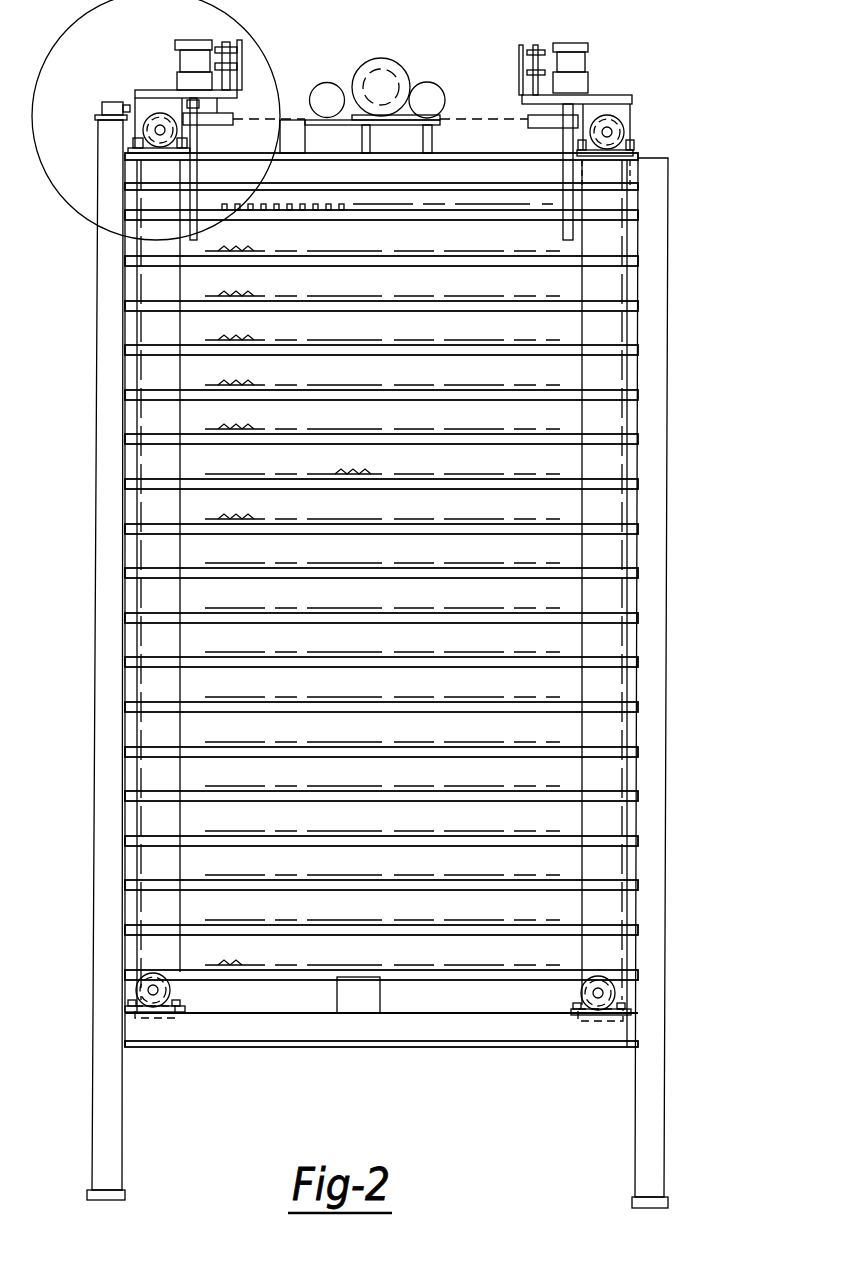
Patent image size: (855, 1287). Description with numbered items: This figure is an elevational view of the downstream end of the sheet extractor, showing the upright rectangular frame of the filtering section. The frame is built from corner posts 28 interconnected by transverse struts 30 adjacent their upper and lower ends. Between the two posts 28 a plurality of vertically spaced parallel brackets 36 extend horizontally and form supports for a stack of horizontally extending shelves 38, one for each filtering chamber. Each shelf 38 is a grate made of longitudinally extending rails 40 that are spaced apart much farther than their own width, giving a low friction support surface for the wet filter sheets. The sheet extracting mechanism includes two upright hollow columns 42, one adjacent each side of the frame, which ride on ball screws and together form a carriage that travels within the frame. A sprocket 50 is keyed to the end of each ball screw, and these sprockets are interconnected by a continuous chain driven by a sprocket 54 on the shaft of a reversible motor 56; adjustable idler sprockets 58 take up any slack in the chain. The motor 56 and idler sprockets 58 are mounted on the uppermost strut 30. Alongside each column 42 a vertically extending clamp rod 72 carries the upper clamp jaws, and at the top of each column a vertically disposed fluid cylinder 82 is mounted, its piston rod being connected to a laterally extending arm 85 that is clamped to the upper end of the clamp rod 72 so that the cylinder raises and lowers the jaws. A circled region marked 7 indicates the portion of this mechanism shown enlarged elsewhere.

The detail circle (FIG. 7 area) 7 is at (156, 120).
The corner post 28 is at (658, 230).
The transverse strut 30 is at (500, 137).
The bracket 36 is at (301, 222).
The shelf 38 is at (353, 205).
The rail 40 is at (283, 203).
The upright hollow column 42 is at (148, 415).
The sprocket 50 is at (155, 147).
The sprocket 54 is at (395, 82).
The reversible motor 56 is at (378, 58).
The adjustable idler sprocket 58 is at (320, 100).
The clamp rod 72 is at (190, 145).
The fluid cylinder 82 is at (192, 40).
The arm 85 is at (233, 118).